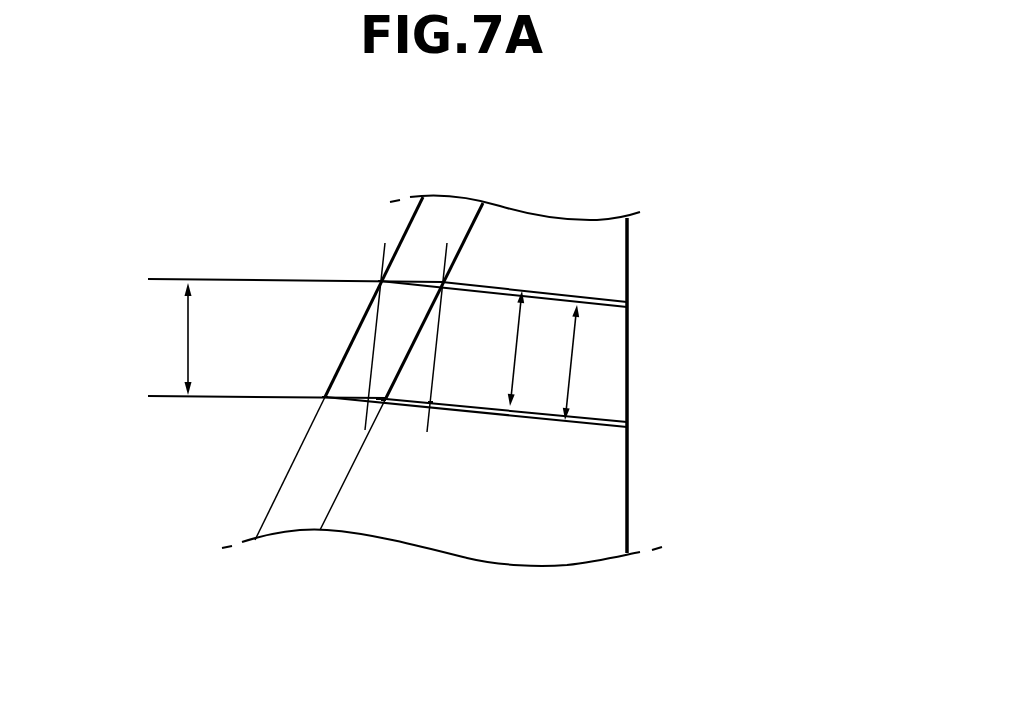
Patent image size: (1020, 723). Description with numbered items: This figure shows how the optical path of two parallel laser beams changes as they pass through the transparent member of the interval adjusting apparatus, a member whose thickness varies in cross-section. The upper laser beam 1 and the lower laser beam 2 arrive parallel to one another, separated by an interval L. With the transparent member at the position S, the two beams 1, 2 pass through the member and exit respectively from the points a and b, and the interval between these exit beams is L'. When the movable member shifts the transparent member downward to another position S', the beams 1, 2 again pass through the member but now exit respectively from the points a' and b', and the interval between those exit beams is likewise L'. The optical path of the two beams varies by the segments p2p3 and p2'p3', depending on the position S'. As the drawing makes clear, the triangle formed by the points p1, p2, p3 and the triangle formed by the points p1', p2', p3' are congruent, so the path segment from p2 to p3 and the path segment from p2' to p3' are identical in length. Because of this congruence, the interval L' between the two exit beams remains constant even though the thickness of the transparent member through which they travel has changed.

The upper laser beam 1 is at (275, 279).
The lower laser beam 2 is at (247, 397).
The position of transparent member S is at (347, 350).
The another position of transparent member S' is at (411, 343).
The vertex of triangle p1p2p3 p1 is at (365, 263).
The vertex of triangle p1'p2'p3' p1' is at (469, 267).
The vertex of triangle p1p2p3 p2 is at (310, 381).
The vertex of triangle p1'p2'p3' p2' is at (443, 440).
The vertex of triangle p1p2p3 p3 is at (395, 453).
The vertex of triangle p1'p2' p3' is at (454, 384).
The exit point of upper laser beam a is at (566, 315).
The exit point of upper laser beam a' is at (602, 281).
The exit point of lower laser beam b is at (536, 429).
The exit point of lower laser beam b' is at (571, 403).
The interval between incident laser beams L is at (177, 339).
The interval between exit laser beams L' is at (528, 355).